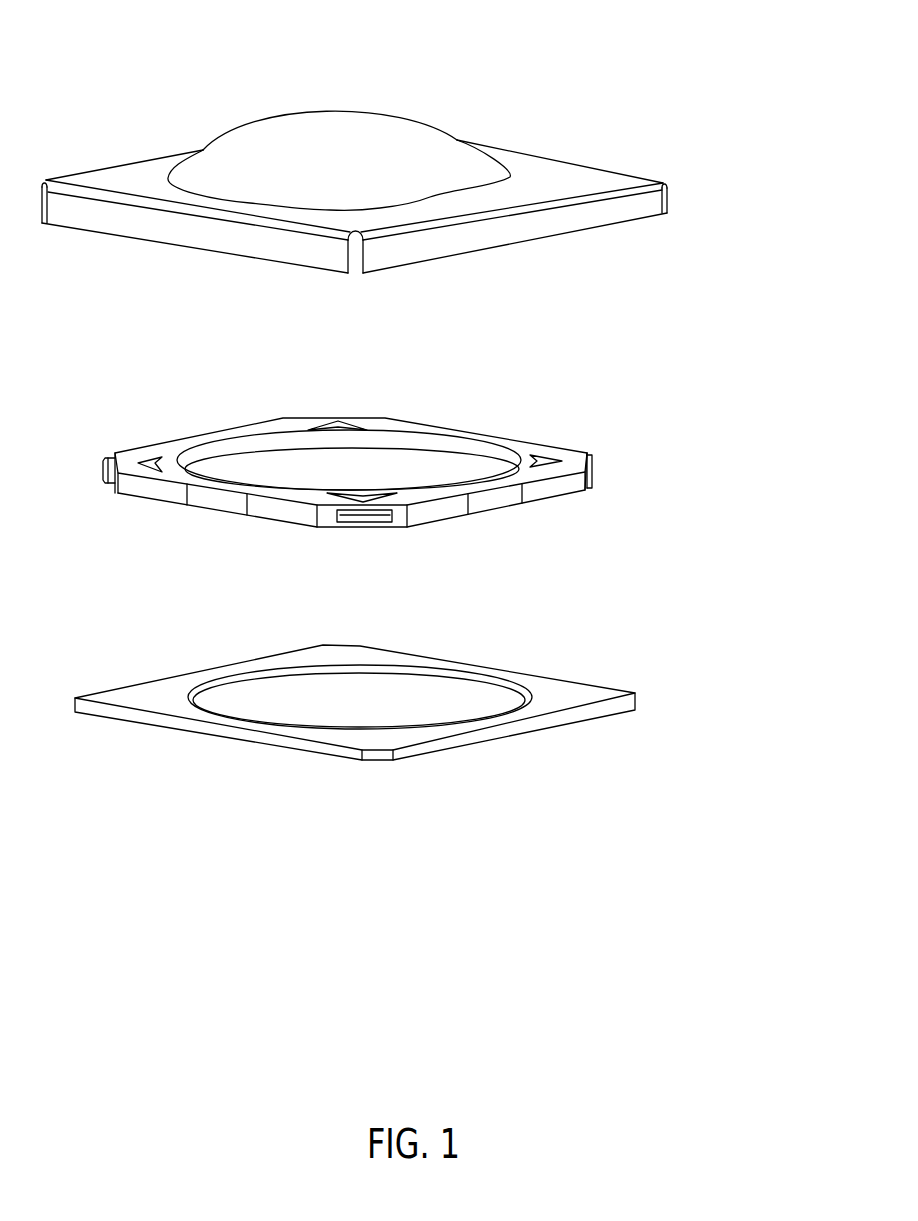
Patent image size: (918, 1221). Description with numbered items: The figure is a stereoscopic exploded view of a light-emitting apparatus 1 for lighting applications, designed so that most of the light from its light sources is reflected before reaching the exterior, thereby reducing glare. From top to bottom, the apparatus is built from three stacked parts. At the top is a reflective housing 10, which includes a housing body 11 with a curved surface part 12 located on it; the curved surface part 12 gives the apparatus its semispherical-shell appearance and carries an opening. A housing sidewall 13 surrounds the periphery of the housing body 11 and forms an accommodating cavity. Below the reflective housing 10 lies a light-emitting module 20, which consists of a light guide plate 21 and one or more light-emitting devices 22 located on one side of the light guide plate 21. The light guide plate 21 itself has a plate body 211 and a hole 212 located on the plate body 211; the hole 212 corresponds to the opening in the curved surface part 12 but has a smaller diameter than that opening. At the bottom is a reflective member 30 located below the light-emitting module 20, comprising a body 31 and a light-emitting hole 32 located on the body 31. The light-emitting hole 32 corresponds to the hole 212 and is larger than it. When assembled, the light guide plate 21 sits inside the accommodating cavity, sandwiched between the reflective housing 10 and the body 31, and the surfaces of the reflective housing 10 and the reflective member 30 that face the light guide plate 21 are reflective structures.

The light-emitting apparatus 1 is at (113, 37).
The reflective housing 10 is at (632, 102).
The housing body 11 is at (540, 172).
The curved surface part 12 is at (335, 118).
The housing sidewall 13 is at (653, 202).
The light-emitting module 20 is at (712, 374).
The light guide plate 21 is at (607, 342).
The plate body 211 is at (495, 437).
The hole 212 is at (392, 440).
The light-emitting device 22 is at (592, 476).
The reflective member 30 is at (650, 580).
The body 31 is at (537, 682).
The light-emitting hole 32 is at (430, 683).